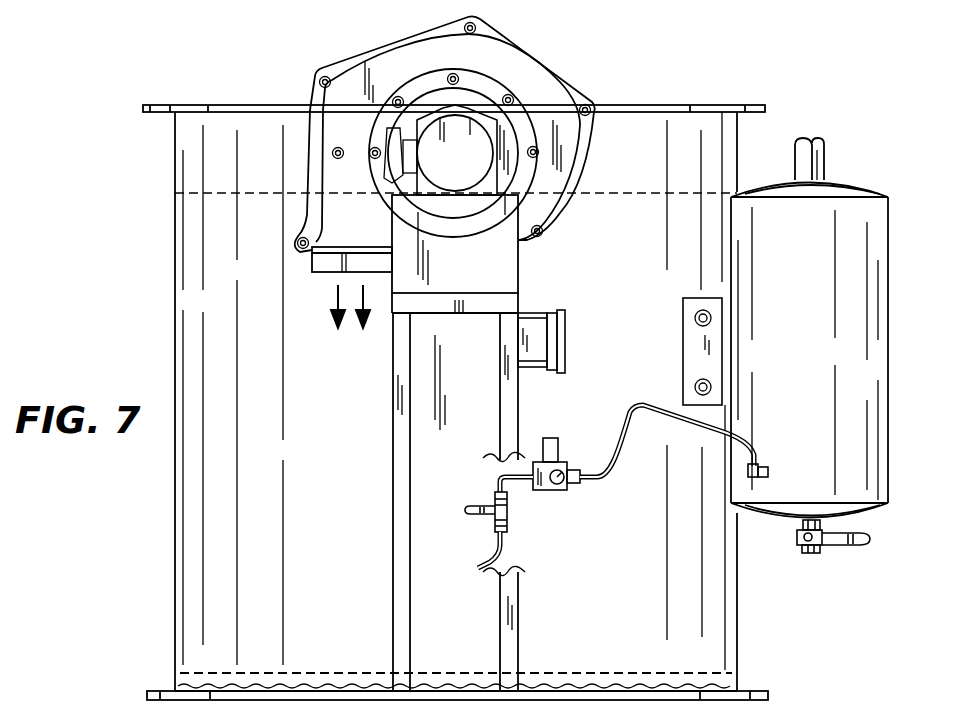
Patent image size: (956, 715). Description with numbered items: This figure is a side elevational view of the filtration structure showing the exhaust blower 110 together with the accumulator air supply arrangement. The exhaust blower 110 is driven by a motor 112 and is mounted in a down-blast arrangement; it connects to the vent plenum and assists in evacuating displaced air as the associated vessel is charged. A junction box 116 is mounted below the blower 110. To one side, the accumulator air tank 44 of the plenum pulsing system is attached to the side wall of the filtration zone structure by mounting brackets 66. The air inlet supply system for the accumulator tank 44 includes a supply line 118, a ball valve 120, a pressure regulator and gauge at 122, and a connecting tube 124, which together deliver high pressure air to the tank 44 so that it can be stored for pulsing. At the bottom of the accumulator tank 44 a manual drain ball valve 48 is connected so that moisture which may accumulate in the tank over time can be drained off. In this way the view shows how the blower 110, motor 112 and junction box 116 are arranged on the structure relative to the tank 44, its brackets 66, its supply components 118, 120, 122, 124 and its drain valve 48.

The exhaust blower 110 is at (498, 66).
The motor 112 is at (470, 160).
The junction box 116 is at (532, 333).
The pressure regulator and gauge 122 is at (552, 437).
The ball valve 120 is at (477, 503).
The supply line 118 is at (487, 556).
The connecting tube 124 is at (628, 437).
The mounting brackets 66 is at (700, 342).
The accumulator air tank 44 is at (836, 218).
The manual drain ball valve 48 is at (812, 555).